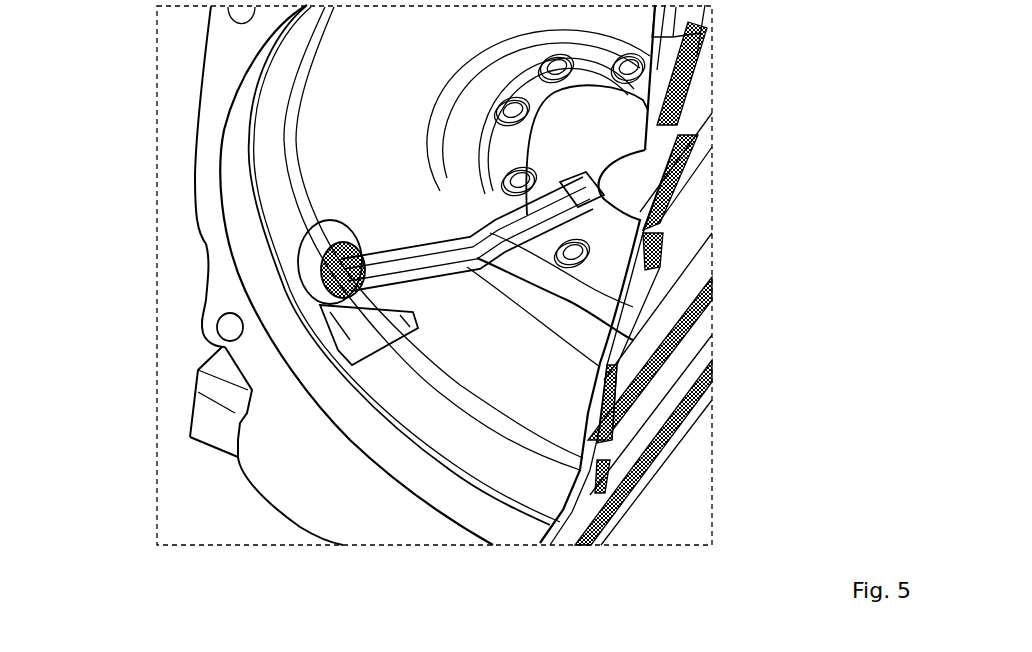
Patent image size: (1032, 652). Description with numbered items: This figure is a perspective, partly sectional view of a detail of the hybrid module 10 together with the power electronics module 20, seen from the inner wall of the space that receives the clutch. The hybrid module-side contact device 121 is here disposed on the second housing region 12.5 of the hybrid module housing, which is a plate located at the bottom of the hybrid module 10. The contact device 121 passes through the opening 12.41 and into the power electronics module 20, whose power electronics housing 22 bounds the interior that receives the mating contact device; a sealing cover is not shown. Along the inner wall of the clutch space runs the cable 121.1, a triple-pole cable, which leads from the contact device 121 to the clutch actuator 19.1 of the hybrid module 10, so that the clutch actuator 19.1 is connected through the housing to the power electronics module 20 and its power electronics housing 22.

The hybrid module 10 is at (170, 63).
The power electronics module 20 is at (192, 460).
The power electronics housing 22 is at (213, 423).
The second housing region 12.5 is at (213, 387).
The opening 12.41 is at (400, 318).
The cable 121.1 is at (350, 256).
The hybrid module-side contact device 121 is at (337, 296).
The clutch actuator 19.1 is at (760, 216).